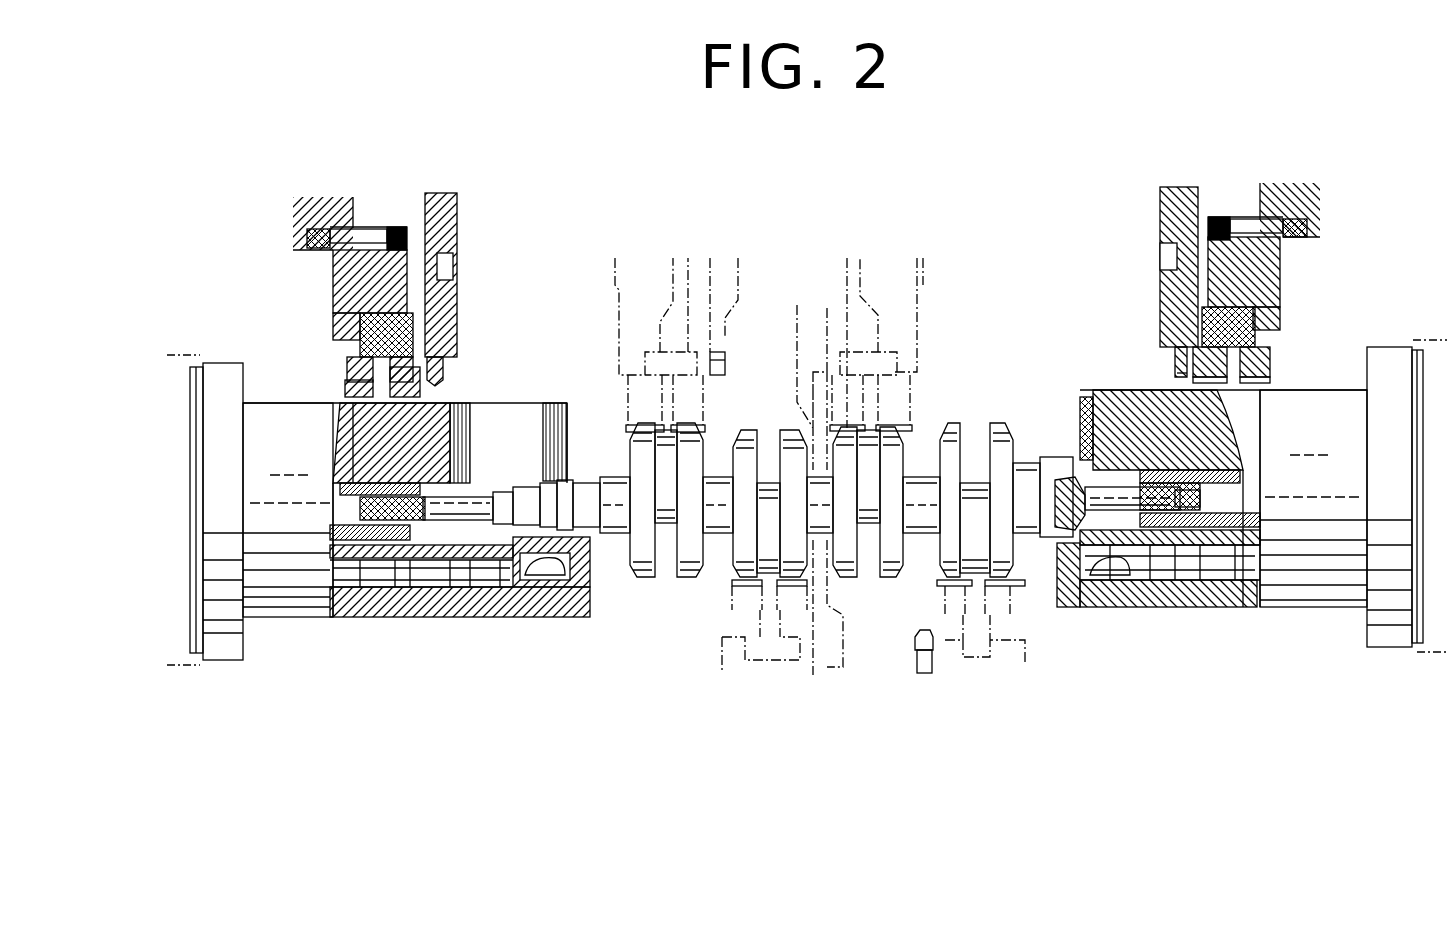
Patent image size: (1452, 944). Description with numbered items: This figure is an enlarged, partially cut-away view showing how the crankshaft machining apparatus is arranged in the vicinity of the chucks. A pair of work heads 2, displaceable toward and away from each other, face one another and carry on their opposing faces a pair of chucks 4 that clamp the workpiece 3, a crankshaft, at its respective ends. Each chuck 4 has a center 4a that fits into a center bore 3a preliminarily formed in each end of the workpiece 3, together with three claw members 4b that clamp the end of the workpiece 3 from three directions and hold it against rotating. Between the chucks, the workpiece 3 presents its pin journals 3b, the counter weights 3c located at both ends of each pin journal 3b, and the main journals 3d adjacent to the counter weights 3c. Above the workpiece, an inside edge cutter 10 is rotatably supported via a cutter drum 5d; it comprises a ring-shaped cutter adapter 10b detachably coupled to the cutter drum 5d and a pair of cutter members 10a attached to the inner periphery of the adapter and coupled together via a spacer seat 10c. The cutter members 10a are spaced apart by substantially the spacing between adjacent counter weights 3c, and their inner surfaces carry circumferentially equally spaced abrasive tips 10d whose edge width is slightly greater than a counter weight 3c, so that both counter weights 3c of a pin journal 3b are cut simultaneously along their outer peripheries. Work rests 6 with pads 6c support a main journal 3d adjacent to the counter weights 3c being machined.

The work head 2 is at (193, 357).
The workpiece 3 is at (830, 513).
The center bore 3a is at (520, 503).
The pin journal 3b is at (668, 575).
The counter weight 3c is at (747, 447).
The main journal 3d is at (717, 527).
The chuck 4 is at (295, 580).
The center 4a is at (460, 517).
The claw member 4b is at (537, 603).
The cutter drum 5d is at (353, 207).
The work rest 6 is at (450, 303).
The pad 6c is at (1180, 373).
The inside edge cutter 10 is at (314, 343).
The cutter member 10a is at (368, 350).
The cutter adapter 10b is at (343, 270).
The spacer seat 10c is at (370, 318).
The abrasive tip 10d is at (400, 388).